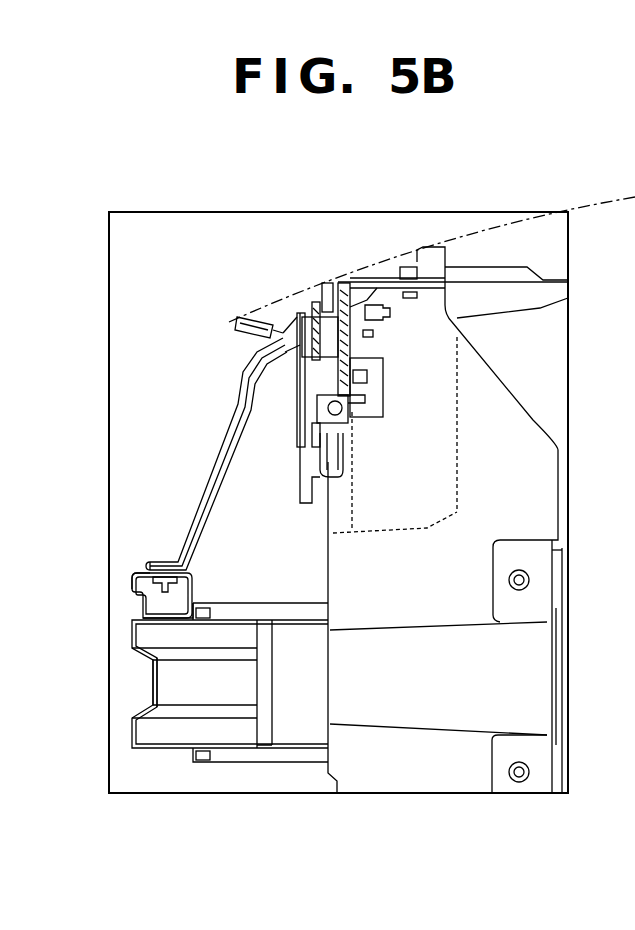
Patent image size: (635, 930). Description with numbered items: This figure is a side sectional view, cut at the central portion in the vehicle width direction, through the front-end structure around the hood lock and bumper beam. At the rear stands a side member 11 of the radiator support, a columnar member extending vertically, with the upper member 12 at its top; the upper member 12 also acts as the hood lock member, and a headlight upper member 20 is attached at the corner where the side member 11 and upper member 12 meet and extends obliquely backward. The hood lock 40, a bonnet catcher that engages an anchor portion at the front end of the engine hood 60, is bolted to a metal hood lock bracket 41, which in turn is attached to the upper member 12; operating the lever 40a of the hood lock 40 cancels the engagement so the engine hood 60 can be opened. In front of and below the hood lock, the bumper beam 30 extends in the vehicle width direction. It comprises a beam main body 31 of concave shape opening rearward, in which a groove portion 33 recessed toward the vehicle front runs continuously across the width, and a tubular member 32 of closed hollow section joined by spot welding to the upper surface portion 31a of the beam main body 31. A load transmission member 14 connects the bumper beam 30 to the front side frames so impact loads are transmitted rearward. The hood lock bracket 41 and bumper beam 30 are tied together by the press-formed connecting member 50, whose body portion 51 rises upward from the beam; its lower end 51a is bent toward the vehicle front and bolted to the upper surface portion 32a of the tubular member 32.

The side member 11 is at (540, 500).
The upper member 12 is at (370, 278).
The load transmission member 14 is at (300, 712).
The headlight upper member 20 is at (497, 266).
The bumper beam 30 is at (142, 756).
The beam main body 31 is at (177, 735).
The upper surface portion 31a is at (140, 606).
The tubular member 32 is at (193, 595).
The upper surface portion 32a is at (133, 575).
The groove portion 33 is at (152, 687).
The hood lock 40 is at (300, 307).
The lever 40a is at (248, 318).
The hood lock bracket 41 is at (330, 307).
The connecting member 50 is at (156, 454).
The body portion 51 is at (197, 522).
The lower end 51a is at (148, 565).
The engine hood 60 is at (453, 228).